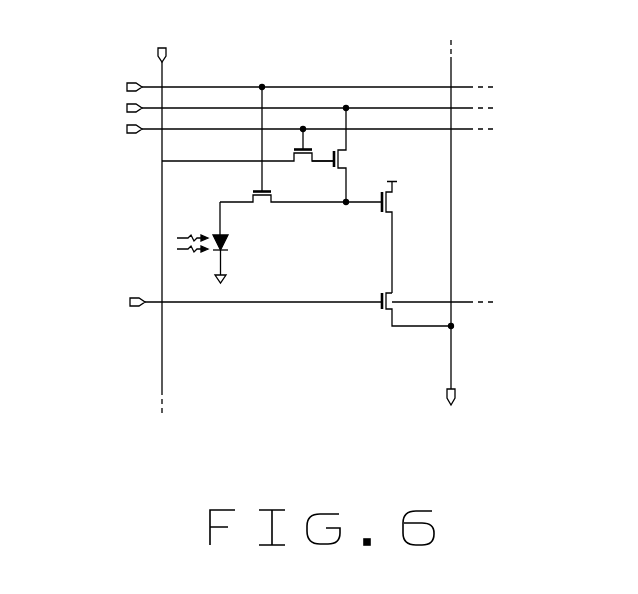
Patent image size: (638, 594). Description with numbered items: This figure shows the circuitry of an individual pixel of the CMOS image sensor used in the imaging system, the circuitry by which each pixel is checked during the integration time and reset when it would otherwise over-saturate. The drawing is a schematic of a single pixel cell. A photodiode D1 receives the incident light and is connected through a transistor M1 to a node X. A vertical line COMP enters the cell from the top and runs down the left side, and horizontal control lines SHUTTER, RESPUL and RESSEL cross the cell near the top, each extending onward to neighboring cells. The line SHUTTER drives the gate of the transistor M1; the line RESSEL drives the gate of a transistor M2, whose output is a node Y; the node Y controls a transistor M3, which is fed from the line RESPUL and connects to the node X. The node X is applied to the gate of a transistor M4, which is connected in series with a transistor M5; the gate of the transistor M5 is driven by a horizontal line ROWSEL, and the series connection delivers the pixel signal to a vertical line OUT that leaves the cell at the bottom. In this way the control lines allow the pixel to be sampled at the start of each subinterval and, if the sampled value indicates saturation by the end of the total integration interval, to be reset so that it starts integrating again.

The comparator/common supply line COMP is at (162, 218).
The shutter control line SHUTTER is at (259, 90).
The reset pulse line RESPUL is at (268, 110).
The reset select line RESSEL is at (269, 133).
The row select line ROWSEL is at (266, 302).
The output line OUT is at (451, 236).
The shutter transistor M1 is at (283, 160).
The reset select transistor M2 is at (248, 160).
The reset pull transistor M3 is at (356, 155).
The source follower transistor M4 is at (406, 238).
The row select transistor M5 is at (416, 309).
The photodiode D1 is at (222, 242).
The node X is at (362, 214).
The node Y is at (323, 150).